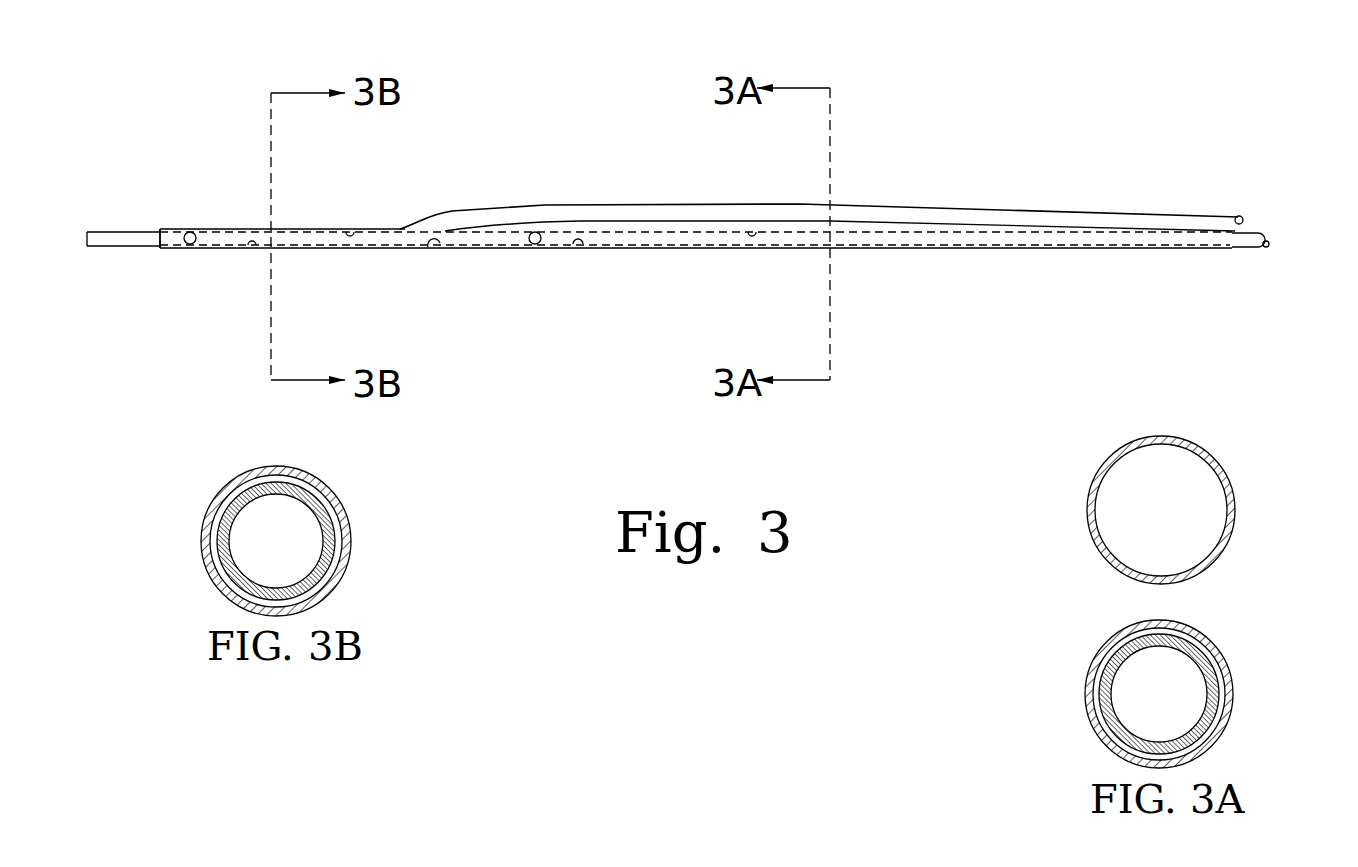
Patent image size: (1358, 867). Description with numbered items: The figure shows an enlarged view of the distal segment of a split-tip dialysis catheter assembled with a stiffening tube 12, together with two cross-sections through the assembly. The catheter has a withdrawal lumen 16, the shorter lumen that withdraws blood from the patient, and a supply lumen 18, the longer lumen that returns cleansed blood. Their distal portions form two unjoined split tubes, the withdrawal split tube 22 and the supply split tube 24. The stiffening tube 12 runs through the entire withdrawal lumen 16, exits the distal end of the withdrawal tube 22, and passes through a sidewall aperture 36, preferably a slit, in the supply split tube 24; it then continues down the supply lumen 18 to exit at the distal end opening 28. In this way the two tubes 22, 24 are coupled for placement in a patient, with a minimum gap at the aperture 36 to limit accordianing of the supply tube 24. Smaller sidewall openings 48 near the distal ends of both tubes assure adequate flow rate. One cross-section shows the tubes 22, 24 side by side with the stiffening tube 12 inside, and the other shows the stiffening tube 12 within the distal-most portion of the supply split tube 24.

In FIG. 3, the stiffening tube 12 is at (118, 248).
In FIG. 3B, the stiffening tube 12 is at (330, 503).
In FIG. 3A, the stiffening tube 12 is at (1213, 650).
In FIG. 3A, the withdrawal lumen 16 is at (1180, 697).
In FIG. 3B, the supply lumen 18 is at (260, 542).
In FIG. 3A, the supply lumen 18 is at (1188, 503).
In FIG. 3, the withdrawal split tube 22 is at (970, 250).
In FIG. 3A, the withdrawal split tube 22 is at (1095, 660).
In FIG. 3, the supply split tube 24 is at (972, 220).
In FIG. 3B, the supply split tube 24 is at (205, 505).
In FIG. 3A, the supply split tube 24 is at (1093, 480).
In FIG. 3, the distal end opening 28 is at (160, 228).
In FIG. 3, the sidewall aperture 36 is at (436, 252).
In FIG. 3, the sidewall openings 48 is at (540, 252).